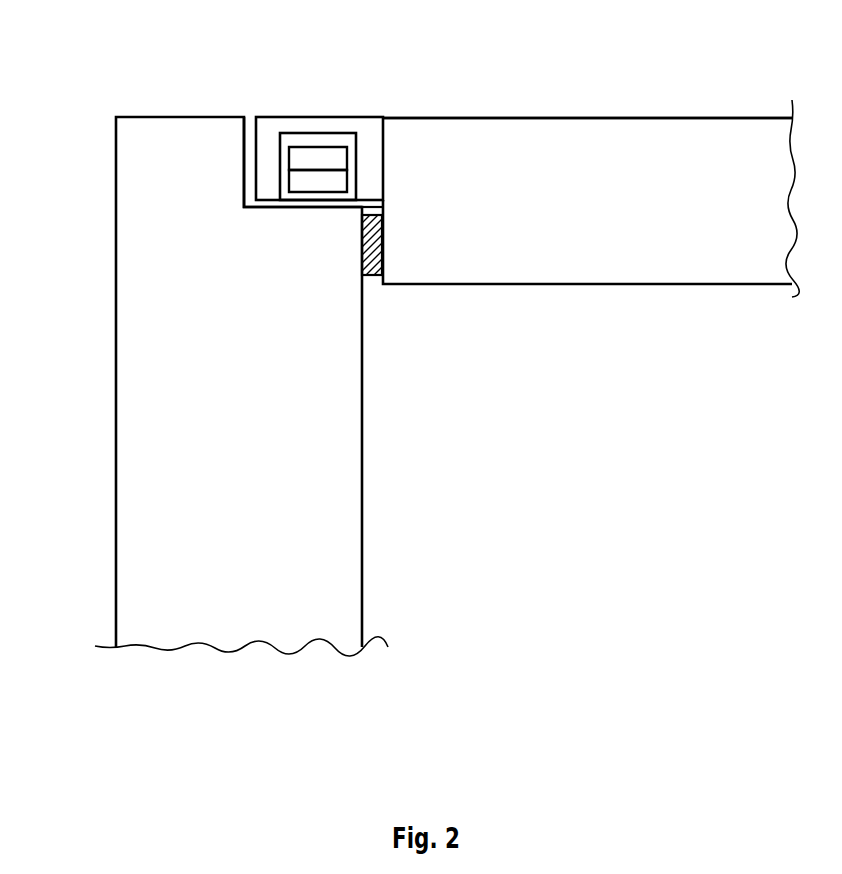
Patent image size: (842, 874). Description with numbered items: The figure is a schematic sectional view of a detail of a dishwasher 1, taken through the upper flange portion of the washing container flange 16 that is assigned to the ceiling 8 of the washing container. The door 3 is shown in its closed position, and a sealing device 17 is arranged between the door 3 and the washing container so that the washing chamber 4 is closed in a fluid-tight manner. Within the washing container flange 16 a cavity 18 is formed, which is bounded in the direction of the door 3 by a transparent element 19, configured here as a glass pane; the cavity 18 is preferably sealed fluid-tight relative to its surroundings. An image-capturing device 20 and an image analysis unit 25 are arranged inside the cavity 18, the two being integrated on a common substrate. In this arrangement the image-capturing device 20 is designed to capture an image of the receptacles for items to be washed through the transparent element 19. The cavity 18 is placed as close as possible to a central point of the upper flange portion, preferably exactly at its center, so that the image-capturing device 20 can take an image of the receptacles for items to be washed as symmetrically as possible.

The dishwasher 1 is at (76, 78).
The door 3 is at (117, 555).
The washing chamber 4 is at (600, 453).
The ceiling 8 is at (418, 118).
The washing container flange 16 is at (292, 118).
The sealing device 17 is at (372, 278).
The cavity 18 is at (342, 116).
The transparent element 19 is at (292, 204).
The image-capturing device 20 is at (347, 181).
The image analysis unit 25 is at (347, 158).